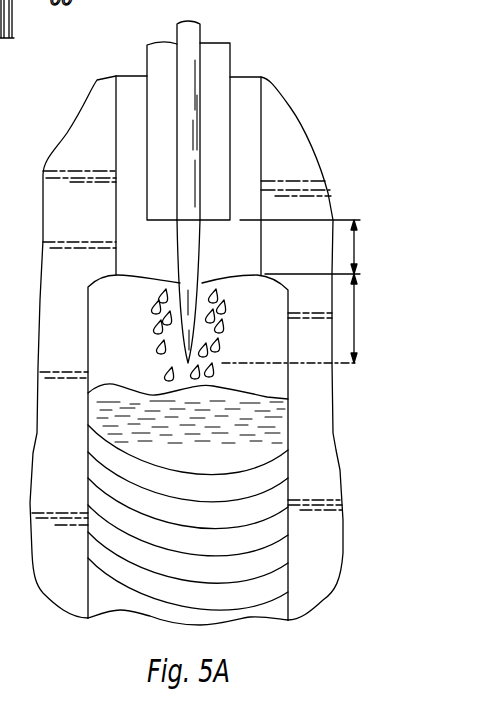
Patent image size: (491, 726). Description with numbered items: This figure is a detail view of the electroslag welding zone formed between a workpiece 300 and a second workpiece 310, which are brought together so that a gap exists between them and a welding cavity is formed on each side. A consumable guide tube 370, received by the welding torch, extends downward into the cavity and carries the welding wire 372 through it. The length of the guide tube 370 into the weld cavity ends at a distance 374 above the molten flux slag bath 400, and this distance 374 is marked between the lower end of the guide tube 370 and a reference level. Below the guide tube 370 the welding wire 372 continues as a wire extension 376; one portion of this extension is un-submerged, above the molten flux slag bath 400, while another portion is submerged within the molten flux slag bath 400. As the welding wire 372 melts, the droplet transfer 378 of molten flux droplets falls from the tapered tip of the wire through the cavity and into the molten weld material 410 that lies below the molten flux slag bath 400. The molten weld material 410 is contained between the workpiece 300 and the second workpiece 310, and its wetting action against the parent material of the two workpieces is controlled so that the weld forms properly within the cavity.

The workpiece 300 is at (75, 157).
The second workpiece 310 is at (300, 163).
The guide tube 370 is at (147, 60).
The welding wire 372 is at (200, 33).
The distance 374 is at (356, 250).
The wire extension 376 is at (356, 307).
The droplet transfer 378 is at (153, 348).
The molten flux slag bath 400 is at (267, 373).
The molten weld material 410 is at (288, 450).